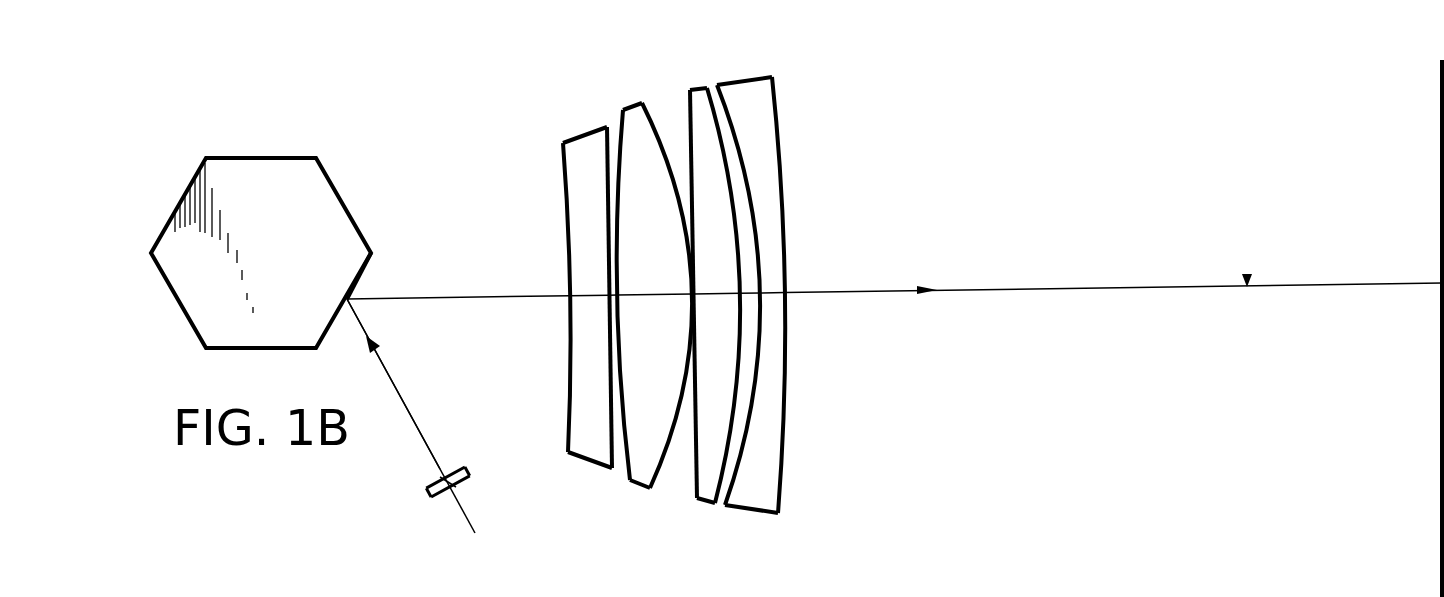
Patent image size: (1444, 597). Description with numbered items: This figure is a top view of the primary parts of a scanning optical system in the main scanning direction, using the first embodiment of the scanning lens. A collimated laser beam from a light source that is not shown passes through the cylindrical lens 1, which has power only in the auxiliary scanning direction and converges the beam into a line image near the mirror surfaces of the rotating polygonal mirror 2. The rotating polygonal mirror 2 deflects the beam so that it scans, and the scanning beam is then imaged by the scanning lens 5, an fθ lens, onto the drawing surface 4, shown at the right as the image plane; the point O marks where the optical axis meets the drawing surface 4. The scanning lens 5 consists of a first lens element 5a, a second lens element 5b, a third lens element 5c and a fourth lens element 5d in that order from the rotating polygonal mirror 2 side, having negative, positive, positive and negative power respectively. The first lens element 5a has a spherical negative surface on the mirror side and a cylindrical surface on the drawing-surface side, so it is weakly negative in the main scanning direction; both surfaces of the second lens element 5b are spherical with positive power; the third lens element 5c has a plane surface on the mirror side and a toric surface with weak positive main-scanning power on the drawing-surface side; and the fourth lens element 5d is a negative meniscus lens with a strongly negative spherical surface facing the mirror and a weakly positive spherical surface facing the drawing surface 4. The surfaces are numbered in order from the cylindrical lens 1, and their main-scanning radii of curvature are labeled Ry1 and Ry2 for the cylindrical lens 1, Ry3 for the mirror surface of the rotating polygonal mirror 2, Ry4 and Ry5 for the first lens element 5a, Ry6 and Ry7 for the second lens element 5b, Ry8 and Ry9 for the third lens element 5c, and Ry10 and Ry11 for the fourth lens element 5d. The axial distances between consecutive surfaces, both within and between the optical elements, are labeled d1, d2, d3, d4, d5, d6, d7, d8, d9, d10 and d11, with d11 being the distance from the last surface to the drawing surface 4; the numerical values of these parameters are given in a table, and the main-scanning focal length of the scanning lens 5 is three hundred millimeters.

The cylindrical lens 1 is at (438, 488).
The rotating polygonal mirror 2 is at (284, 158).
The drawing surface 4 is at (1441, 117).
The scanning lens 5 is at (777, 30).
The first lens element 5a is at (566, 279).
The second lens element 5b is at (654, 285).
The third lens element 5c is at (737, 297).
The fourth lens element 5d is at (785, 273).
The optical axis point on scanned surface O is at (1247, 278).
The radius of curvature in the main scanning direction of the first surface Ry1 is at (426, 492).
The radius of curvature in the main scanning direction of the second surface Ry2 is at (445, 477).
The radius of curvature in the main scanning direction of the third surface Ry3 is at (366, 256).
The radius of curvature in the main scanning direction of the fourth surface Ry4 is at (563, 432).
The radius of curvature in the main scanning direction of the fifth surface Ry5 is at (606, 465).
The radius of curvature in the main scanning direction of the sixth surface Ry6 is at (620, 432).
The radius of curvature in the main scanning direction of the seventh surface Ry7 is at (662, 480).
The radius of curvature in the main scanning direction of the eighth surface Ry8 is at (693, 488).
The radius of curvature in the main scanning direction of the ninth surface Ry9 is at (728, 494).
The radius of curvature in the main scanning direction of the tenth surface Ry10 is at (737, 452).
The radius of curvature in the main scanning direction of the eleventh surface Ry11 is at (785, 428).
The distance between surfaces along the optical axis d1 is at (455, 487).
The distance between surfaces along the optical axis d2 is at (425, 397).
The distance between surfaces along the optical axis d3 is at (464, 298).
The distance between surfaces along the optical axis d4 is at (590, 297).
The distance between surfaces along the optical axis d5 is at (611, 302).
The distance between surfaces along the optical axis d6 is at (643, 297).
The distance between surfaces along the optical axis d7 is at (693, 298).
The distance between surfaces along the optical axis d8 is at (718, 297).
The distance between surfaces along the optical axis d9 is at (741, 298).
The distance between surfaces along the optical axis d10 is at (768, 291).
The distance between surfaces along the optical axis d11 is at (1080, 288).